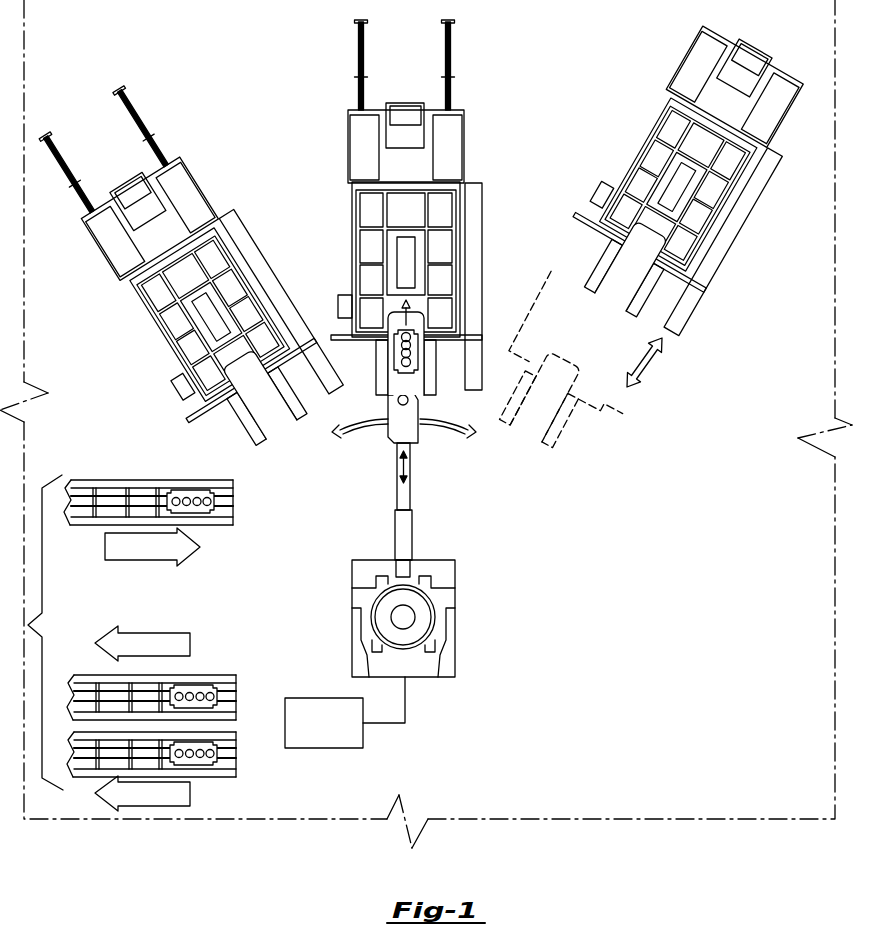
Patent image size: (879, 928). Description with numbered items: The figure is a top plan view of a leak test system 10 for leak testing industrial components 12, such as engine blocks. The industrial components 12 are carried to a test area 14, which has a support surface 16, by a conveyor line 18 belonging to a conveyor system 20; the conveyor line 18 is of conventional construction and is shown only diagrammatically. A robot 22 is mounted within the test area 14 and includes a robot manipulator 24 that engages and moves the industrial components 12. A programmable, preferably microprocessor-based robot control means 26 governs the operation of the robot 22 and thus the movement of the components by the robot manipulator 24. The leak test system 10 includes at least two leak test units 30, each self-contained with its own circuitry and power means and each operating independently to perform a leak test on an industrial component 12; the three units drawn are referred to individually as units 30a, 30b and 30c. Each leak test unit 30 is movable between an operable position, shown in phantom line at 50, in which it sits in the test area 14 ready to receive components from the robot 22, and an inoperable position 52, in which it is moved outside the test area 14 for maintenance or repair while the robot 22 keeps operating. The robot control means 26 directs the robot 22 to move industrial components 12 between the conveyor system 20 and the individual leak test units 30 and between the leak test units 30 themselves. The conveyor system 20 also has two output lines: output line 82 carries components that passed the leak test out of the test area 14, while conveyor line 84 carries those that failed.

The leak test system 10 is at (281, 839).
The industrial components 12 is at (183, 490).
The test area 14 is at (692, 682).
The support surface 16 is at (595, 798).
The conveyor line 18 is at (73, 484).
The conveyor system 20 is at (35, 632).
The robot 22 is at (455, 618).
The robot manipulator 24 is at (410, 417).
The robot control means 26 is at (327, 749).
The leak test unit 30 is at (240, 233).
The leak test unit 30a is at (137, 312).
The leak test unit 30b is at (632, 147).
The leak test unit 30c is at (350, 246).
The operable position 50 is at (612, 447).
The inoperable position 52 is at (640, 124).
The output line 82 is at (220, 675).
The conveyor line 84 is at (87, 773).